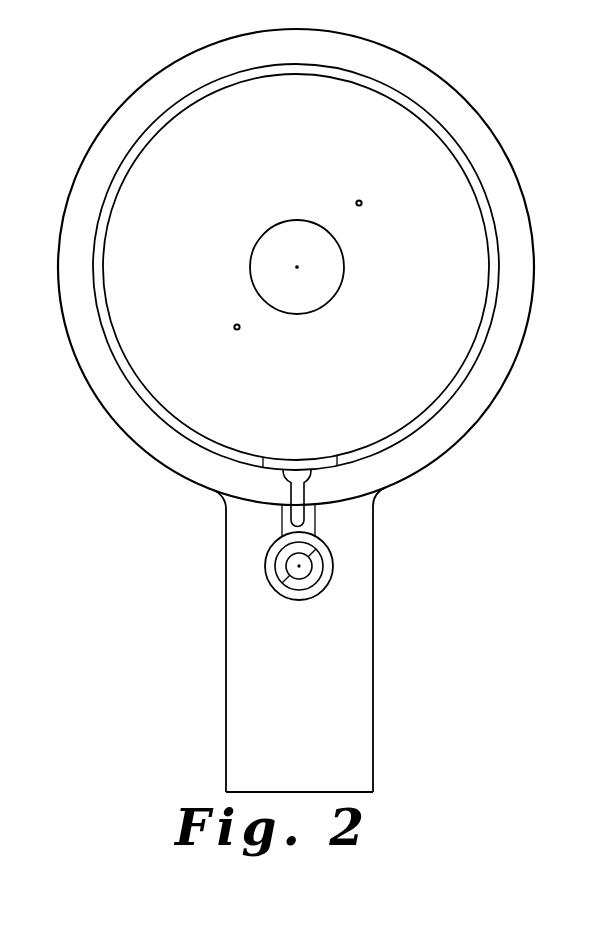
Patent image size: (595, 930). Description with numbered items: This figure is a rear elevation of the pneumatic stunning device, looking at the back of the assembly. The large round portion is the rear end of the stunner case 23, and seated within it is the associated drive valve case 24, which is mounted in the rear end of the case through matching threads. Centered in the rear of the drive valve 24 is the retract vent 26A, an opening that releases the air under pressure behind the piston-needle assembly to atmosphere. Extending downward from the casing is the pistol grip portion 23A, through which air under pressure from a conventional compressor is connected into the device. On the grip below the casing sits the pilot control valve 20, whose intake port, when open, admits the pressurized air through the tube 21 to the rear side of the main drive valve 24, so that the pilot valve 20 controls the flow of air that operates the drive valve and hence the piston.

The pilot control valve 20 is at (316, 596).
The tube 21 is at (289, 489).
The stunner case 23 is at (412, 56).
The pistol grip portion 23A is at (373, 643).
The drive valve 24 is at (443, 122).
The retract vent 26A is at (323, 303).